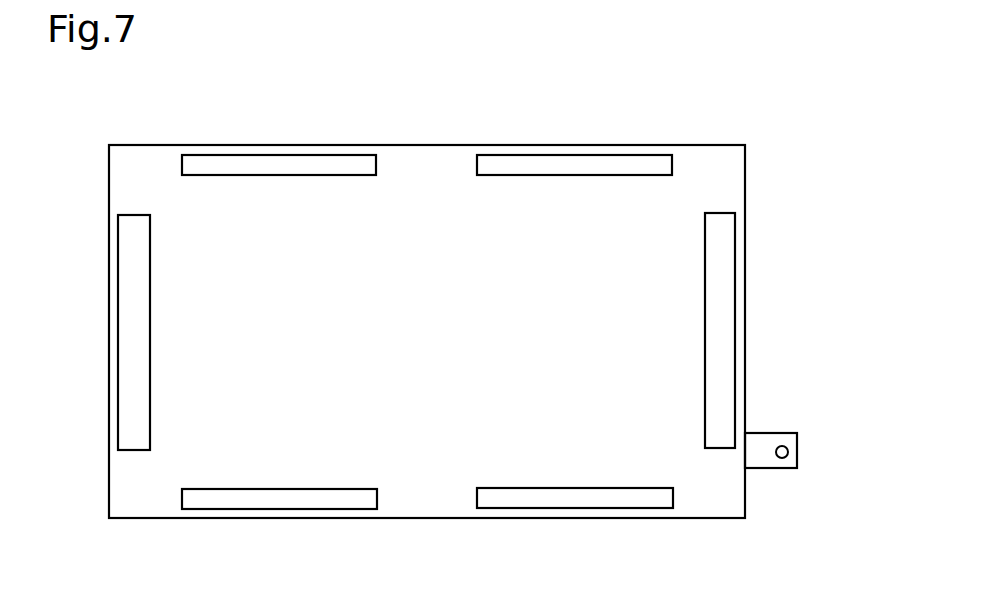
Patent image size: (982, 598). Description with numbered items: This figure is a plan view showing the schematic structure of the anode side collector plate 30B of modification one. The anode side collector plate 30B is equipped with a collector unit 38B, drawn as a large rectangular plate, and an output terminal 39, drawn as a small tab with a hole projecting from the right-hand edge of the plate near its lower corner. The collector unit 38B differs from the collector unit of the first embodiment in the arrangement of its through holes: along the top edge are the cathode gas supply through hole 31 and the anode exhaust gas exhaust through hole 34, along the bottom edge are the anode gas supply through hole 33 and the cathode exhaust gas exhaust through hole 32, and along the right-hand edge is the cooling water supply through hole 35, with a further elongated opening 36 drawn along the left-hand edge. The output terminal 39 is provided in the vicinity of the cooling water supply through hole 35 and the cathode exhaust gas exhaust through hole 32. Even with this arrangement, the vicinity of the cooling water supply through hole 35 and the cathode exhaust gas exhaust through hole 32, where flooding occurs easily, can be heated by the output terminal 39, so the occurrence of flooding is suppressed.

The anode side collector plate 30B is at (815, 474).
The cathode gas supply through hole 31 is at (285, 165).
The cathode exhaust gas exhaust through hole 32 is at (584, 496).
The anode gas supply through hole 33 is at (285, 497).
The anode exhaust gas exhaust through hole 34 is at (590, 165).
The cooling water supply through hole 35 is at (725, 328).
The sixth electrode piece 36 is at (130, 328).
The collector unit 38B is at (745, 508).
The output terminal 39 is at (767, 468).